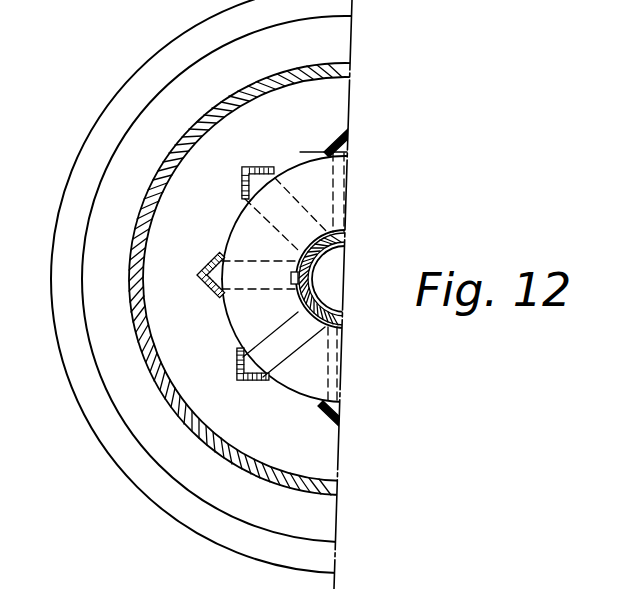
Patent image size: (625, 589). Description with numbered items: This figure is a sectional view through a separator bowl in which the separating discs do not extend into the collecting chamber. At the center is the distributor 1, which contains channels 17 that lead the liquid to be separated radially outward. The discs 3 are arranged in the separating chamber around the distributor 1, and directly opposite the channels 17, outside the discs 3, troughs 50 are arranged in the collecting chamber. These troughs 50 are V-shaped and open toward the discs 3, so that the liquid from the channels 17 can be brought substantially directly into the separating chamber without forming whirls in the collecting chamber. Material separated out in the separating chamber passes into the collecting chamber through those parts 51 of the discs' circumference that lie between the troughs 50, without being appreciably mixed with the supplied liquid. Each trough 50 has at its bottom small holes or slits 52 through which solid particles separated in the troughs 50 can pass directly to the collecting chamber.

The distributor 1 is at (330, 250).
The discs 3 is at (302, 387).
The channels 17 is at (252, 290).
The troughs 50 is at (262, 170).
The parts of the discs' circumference 51 is at (232, 228).
The holes or slits 52 is at (242, 170).